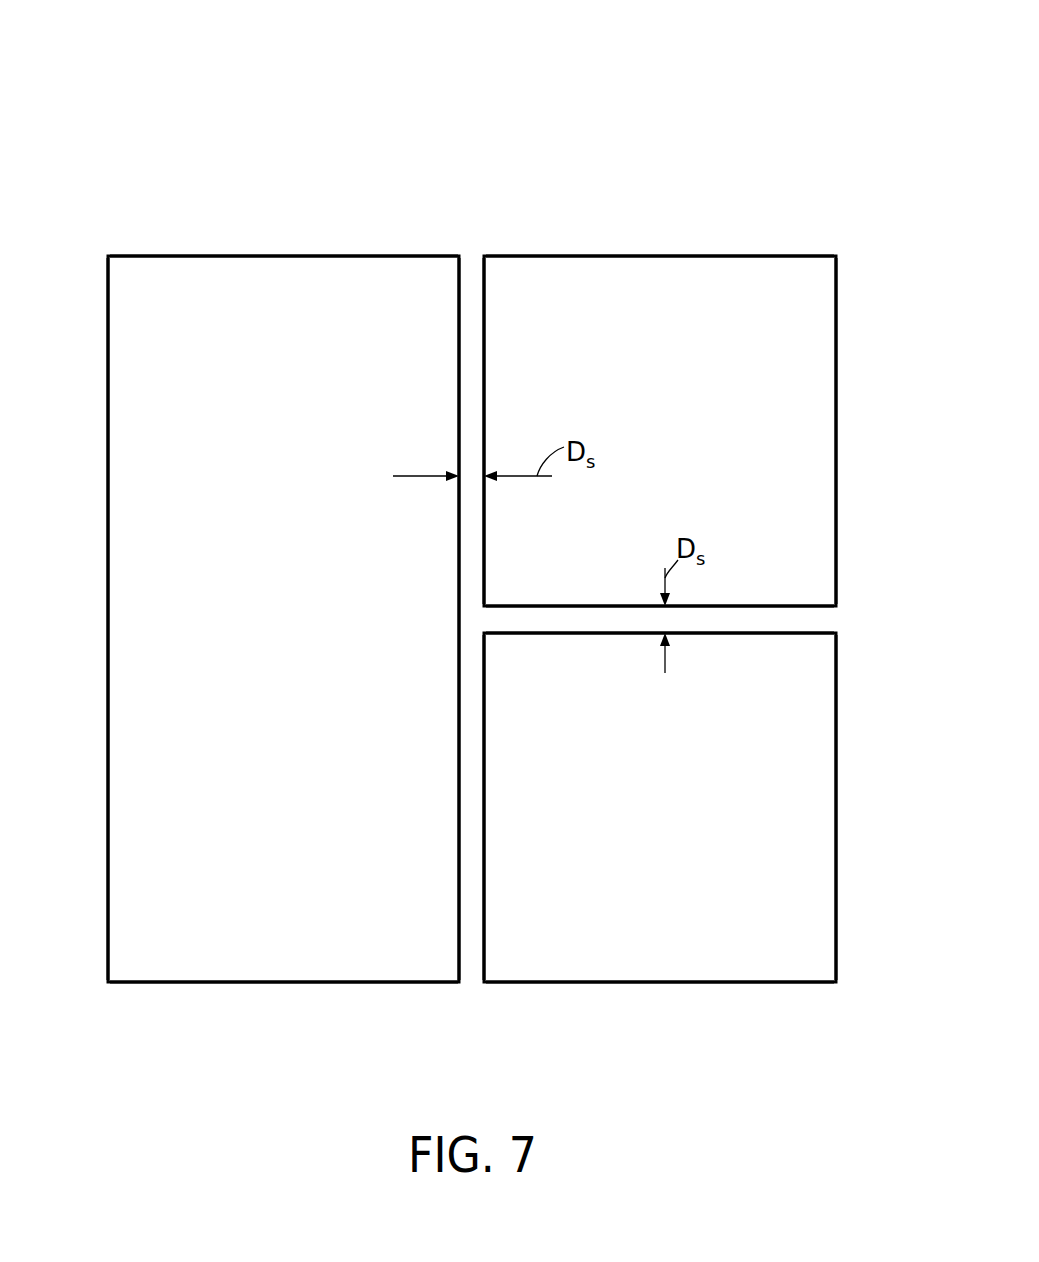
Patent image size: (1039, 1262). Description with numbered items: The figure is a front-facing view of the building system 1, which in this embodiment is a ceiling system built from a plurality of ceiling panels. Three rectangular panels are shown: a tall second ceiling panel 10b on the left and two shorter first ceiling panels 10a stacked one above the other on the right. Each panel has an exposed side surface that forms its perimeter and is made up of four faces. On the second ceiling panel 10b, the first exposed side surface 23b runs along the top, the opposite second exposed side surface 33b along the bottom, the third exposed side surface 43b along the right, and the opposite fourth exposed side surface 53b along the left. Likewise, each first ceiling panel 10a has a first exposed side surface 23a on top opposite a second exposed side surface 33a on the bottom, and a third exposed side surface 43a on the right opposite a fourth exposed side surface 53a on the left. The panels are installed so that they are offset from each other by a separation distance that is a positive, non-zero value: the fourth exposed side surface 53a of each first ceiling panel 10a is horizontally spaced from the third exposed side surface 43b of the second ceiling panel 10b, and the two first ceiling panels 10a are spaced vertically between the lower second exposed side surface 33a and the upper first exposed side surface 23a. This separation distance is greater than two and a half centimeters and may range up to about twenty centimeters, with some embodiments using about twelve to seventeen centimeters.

The building system 1 is at (142, 146).
The first ceiling panel 10a is at (757, 381).
The second ceiling panel 10b is at (229, 894).
The first exposed side surface of first ceiling panel 23a is at (665, 256).
The first exposed side surface of second ceiling panel 23b is at (305, 256).
The second exposed side surface of first ceiling panel 33a is at (561, 608).
The second exposed side surface of second ceiling panel 33b is at (355, 983).
The third exposed side surface of first ceiling panel 43a is at (836, 556).
The third exposed side surface of second ceiling panel 43b is at (460, 718).
The fourth exposed side surface of first ceiling panel 53a is at (484, 392).
The fourth exposed side surface of second ceiling panel 53b is at (108, 568).